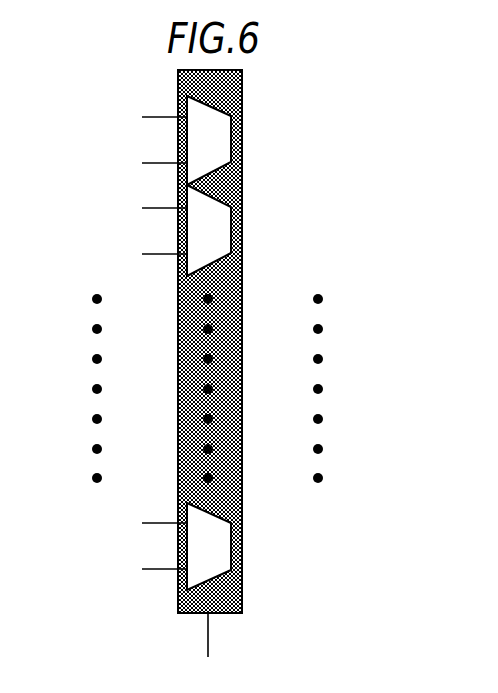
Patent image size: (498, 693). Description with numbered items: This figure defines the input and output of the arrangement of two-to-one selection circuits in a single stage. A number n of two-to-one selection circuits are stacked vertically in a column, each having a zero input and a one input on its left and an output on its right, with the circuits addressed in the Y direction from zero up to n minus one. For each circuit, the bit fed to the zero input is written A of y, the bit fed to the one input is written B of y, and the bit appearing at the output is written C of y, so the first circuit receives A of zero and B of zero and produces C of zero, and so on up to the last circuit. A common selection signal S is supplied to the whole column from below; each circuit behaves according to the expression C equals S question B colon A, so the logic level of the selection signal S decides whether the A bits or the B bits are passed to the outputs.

The selection signal S is at (207, 651).